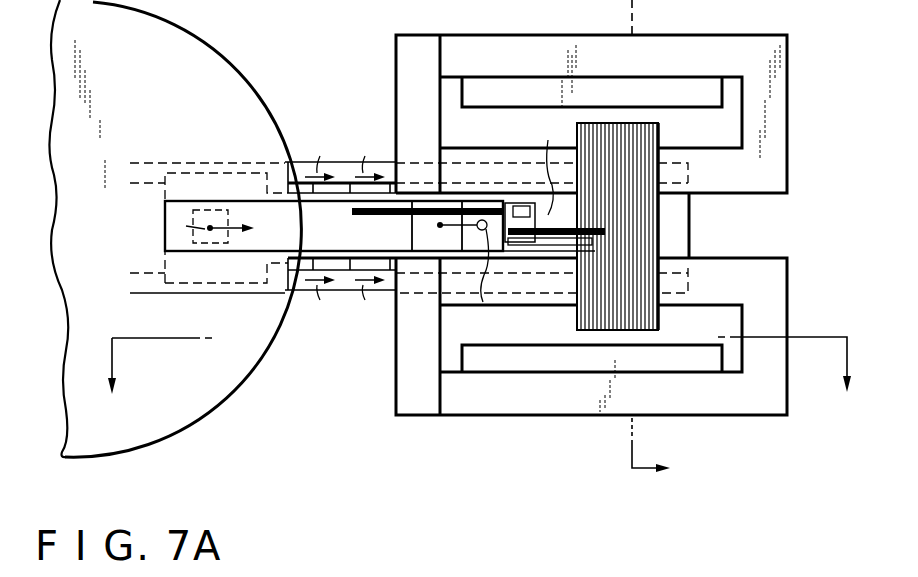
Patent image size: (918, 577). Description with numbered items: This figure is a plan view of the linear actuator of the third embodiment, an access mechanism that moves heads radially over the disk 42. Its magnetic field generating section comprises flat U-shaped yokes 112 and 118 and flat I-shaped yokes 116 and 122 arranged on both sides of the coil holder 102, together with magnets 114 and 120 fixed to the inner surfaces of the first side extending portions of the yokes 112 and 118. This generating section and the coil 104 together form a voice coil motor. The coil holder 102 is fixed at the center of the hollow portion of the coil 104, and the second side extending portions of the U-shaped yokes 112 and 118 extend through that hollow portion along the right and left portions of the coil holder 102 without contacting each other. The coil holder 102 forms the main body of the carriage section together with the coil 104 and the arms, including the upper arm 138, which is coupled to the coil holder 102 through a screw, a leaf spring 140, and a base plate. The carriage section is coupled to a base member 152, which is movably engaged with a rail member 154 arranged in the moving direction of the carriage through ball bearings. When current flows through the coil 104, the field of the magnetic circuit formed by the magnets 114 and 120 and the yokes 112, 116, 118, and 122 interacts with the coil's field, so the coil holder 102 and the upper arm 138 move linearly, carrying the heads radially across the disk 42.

The disk 42 is at (212, 405).
The coil holder 102 is at (575, 212).
The coil 104 is at (600, 233).
The U-shaped yoke 112 is at (752, 45).
The magnet 114 is at (507, 80).
The I-shaped yoke 116 is at (417, 45).
The U-shaped yoke 118 is at (733, 413).
The magnet 120 is at (543, 350).
The I-shaped yoke 122 is at (417, 405).
The upper arm 138 is at (296, 205).
The leaf spring 140 is at (478, 200).
The base member 152 is at (296, 260).
The rail member 154 is at (248, 294).